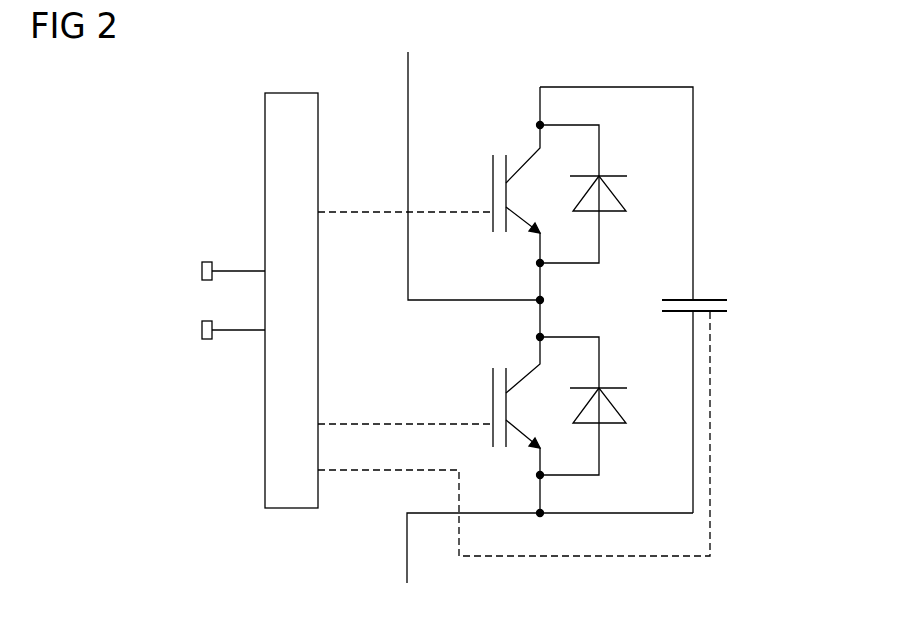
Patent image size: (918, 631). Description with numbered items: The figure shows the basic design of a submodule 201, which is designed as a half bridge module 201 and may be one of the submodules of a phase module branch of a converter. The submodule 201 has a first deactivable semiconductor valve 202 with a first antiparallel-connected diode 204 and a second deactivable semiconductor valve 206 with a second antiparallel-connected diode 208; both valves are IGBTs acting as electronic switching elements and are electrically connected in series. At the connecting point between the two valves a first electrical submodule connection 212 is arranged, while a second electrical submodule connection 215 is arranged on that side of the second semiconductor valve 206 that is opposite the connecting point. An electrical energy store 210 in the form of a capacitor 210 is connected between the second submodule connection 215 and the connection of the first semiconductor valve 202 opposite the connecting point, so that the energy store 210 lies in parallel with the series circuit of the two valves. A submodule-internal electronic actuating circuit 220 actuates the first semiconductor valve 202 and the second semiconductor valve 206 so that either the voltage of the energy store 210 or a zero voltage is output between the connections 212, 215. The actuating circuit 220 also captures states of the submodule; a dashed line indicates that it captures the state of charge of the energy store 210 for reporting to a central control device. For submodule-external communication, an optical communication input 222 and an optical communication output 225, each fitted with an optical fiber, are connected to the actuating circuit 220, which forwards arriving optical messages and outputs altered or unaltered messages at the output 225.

The submodule 201 is at (731, 76).
The first deactivable semiconductor valve 202 is at (493, 178).
The first antiparallel-connected diode 204 is at (616, 190).
The second deactivable semiconductor valve 206 is at (493, 389).
The second antiparallel-connected diode 208 is at (616, 401).
The energy store 210 is at (714, 299).
The first electrical submodule connection 212 is at (408, 75).
The second electrical submodule connection 215 is at (407, 568).
The actuating circuit 220 is at (291, 93).
The optical communication input 222 is at (202, 271).
The optical communication output 225 is at (202, 330).